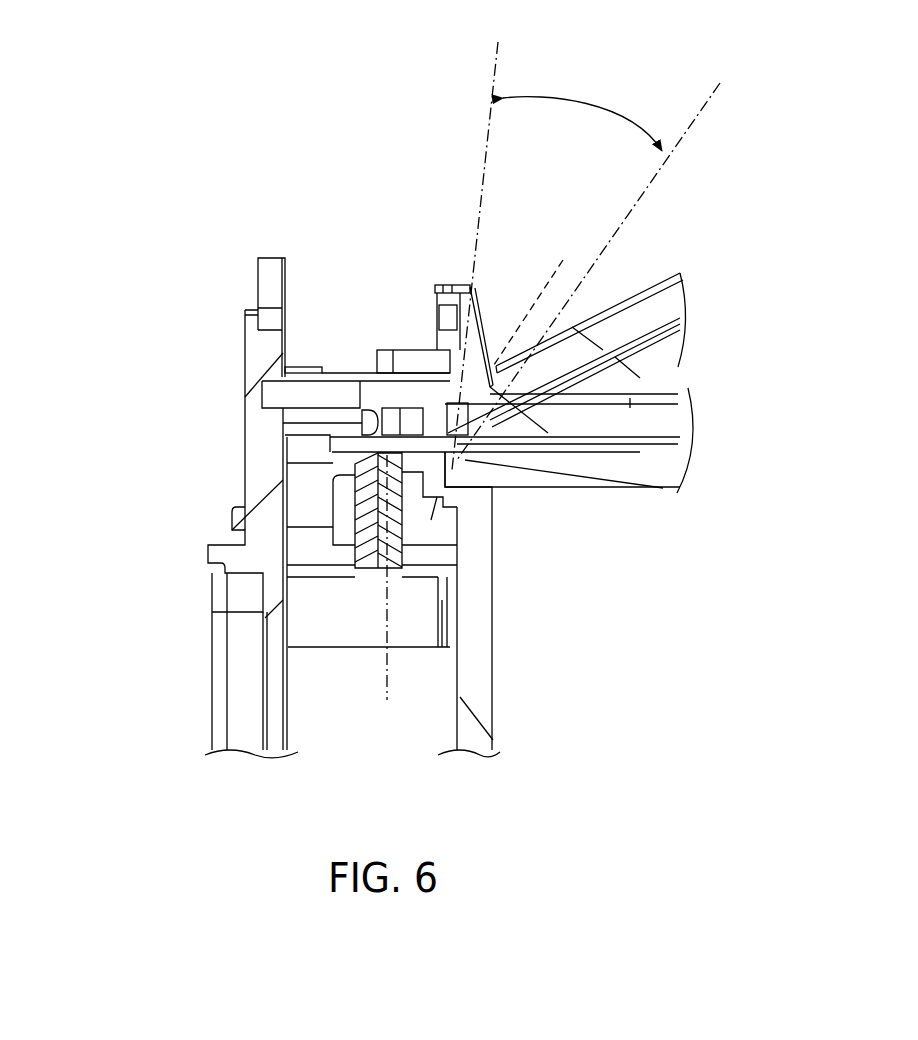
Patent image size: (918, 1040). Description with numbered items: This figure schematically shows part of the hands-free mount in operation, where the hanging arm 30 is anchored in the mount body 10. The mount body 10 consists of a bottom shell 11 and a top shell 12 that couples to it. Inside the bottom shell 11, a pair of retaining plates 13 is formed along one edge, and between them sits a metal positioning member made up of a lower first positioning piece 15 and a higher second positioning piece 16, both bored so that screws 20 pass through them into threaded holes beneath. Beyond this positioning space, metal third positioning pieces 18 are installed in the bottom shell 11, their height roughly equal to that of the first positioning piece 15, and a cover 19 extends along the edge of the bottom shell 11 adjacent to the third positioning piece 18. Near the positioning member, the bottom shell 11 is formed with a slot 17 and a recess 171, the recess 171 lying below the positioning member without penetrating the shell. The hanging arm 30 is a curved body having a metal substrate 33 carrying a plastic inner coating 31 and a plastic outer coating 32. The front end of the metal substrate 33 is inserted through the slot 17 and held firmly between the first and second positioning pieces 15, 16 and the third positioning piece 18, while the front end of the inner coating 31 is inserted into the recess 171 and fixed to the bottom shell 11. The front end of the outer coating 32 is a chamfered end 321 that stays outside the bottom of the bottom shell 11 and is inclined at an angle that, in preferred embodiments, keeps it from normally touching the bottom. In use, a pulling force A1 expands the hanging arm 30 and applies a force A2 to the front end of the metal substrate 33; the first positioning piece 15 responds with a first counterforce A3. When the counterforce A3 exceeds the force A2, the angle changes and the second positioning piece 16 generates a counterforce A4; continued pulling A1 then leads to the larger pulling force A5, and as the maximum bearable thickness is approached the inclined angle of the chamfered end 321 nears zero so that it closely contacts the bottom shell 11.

The mount body 10 is at (238, 296).
The top shell 12 is at (253, 443).
The cover 19 is at (307, 397).
The third positioning piece 18 is at (390, 420).
The slot 17 is at (505, 325).
The recess 171 is at (458, 490).
The bottom shell 11 is at (497, 555).
The first positioning piece 15 is at (497, 580).
The retaining plate 13 is at (470, 605).
The second positioning piece 16 is at (368, 575).
The screw 20 is at (300, 485).
The hanging arm 30 is at (566, 435).
The inner coating 31 is at (643, 367).
The outer coating 32 is at (618, 317).
The chamfered end 321 is at (560, 277).
The metal substrate 33 is at (630, 322).
The pulling force A1 is at (600, 256).
The force A2 is at (347, 438).
The first counterforce A3 is at (386, 604).
The counterforce A4 is at (388, 478).
The pulling force A5 is at (487, 237).